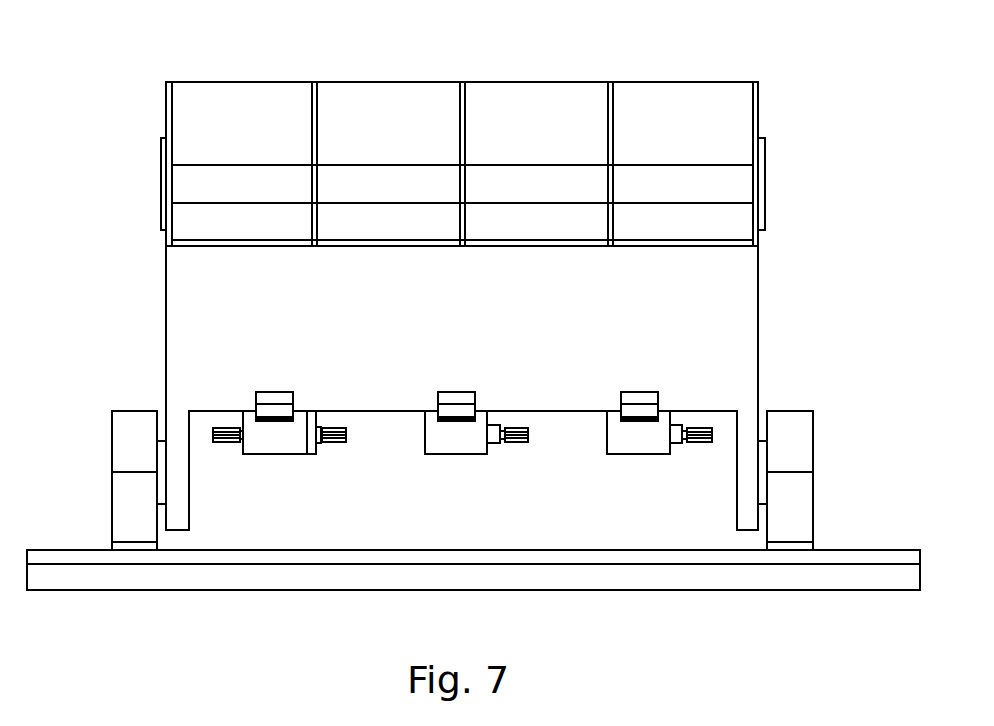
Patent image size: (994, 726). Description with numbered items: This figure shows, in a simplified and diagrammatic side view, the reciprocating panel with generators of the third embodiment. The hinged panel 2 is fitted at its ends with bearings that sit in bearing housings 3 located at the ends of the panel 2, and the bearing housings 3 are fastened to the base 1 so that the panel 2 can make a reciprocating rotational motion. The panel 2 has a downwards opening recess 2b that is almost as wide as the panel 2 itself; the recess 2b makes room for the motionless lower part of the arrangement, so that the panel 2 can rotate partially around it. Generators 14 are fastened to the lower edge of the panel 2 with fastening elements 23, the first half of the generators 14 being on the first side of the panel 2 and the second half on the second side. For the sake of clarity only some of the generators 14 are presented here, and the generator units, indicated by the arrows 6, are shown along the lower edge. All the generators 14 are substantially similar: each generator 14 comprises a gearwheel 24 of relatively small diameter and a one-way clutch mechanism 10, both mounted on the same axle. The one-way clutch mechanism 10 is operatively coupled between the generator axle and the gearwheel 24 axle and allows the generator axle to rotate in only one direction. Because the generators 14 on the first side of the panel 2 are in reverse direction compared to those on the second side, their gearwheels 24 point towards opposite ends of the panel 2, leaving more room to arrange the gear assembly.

The base 1 is at (858, 552).
The hinged panel 2 is at (588, 88).
The downwards opening recess 2b is at (402, 411).
The bearing housing 3 is at (117, 427).
The sensor unit 6 is at (254, 350).
The one-way clutch mechanism 10 is at (495, 443).
The generator 14 is at (310, 411).
The fastening element 23 is at (632, 392).
The gearwheel 24 is at (223, 441).